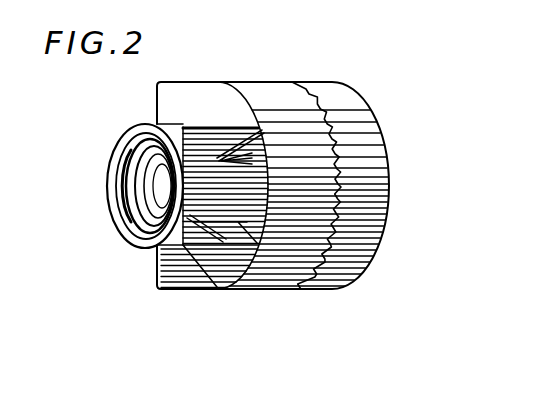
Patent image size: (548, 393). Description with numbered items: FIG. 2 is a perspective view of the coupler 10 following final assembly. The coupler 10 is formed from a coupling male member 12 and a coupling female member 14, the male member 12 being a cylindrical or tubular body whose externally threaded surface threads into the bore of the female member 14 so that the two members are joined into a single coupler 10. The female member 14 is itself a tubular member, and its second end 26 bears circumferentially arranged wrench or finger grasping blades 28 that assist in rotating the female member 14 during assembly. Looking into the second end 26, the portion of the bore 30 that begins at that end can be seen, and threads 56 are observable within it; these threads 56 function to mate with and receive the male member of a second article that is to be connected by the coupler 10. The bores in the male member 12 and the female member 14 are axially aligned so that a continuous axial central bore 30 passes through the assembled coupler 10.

The coupler 10 is at (329, 70).
The coupling male member 12 is at (363, 248).
The coupling female member 14 is at (278, 277).
The second end 26 is at (119, 225).
The wrench or finger grasping blades 28 is at (195, 98).
The bore 30 is at (104, 176).
The threads 56 is at (127, 196).